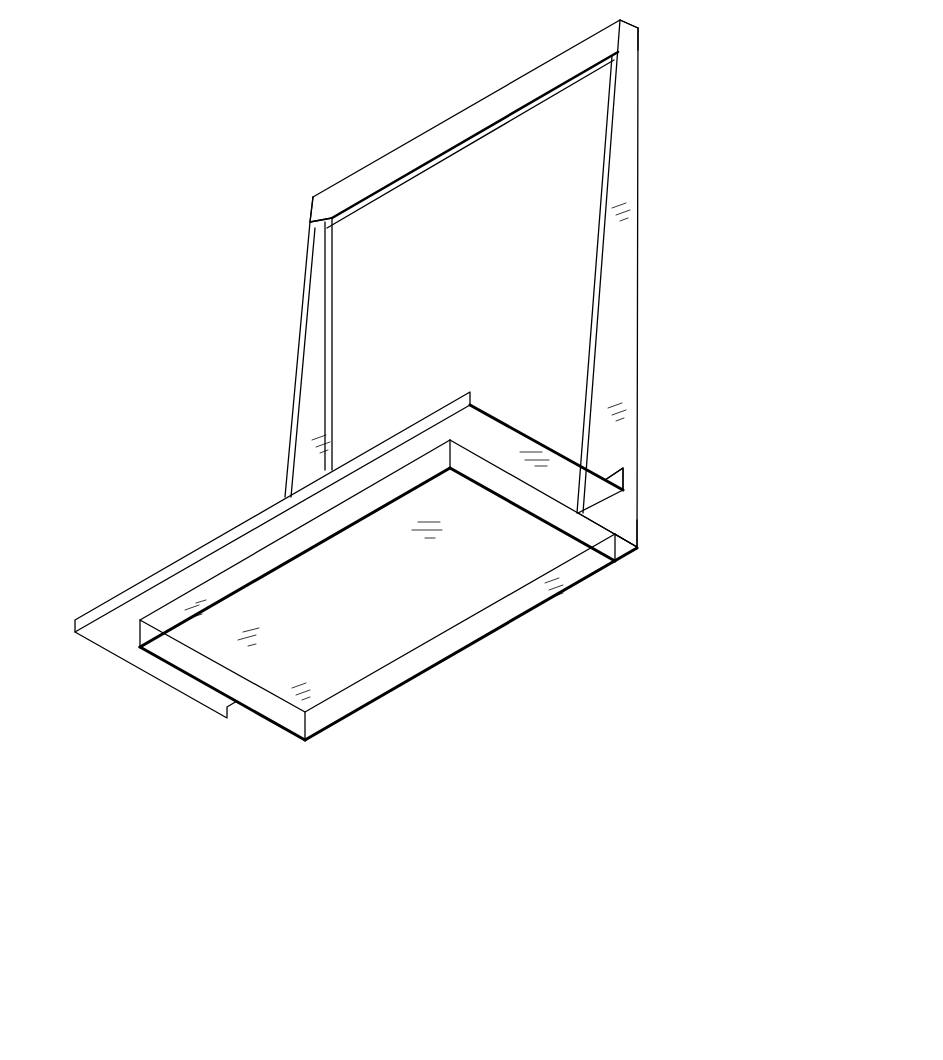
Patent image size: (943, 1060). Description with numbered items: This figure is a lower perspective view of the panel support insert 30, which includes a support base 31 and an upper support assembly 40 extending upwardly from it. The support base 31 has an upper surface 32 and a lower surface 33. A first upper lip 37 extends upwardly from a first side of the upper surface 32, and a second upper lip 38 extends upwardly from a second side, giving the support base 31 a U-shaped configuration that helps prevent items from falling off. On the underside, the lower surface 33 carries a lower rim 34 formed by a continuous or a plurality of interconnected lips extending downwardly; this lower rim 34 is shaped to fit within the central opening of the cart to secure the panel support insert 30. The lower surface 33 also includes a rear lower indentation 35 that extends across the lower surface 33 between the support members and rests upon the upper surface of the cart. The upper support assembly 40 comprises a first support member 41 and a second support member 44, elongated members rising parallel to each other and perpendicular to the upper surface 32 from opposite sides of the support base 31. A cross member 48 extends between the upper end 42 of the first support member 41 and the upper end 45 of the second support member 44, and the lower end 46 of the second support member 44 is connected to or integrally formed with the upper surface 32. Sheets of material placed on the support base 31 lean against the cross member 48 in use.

The panel support insert 30 is at (150, 268).
The support base 31 is at (117, 638).
The upper surface 32 is at (488, 396).
The lower surface 33 is at (350, 597).
The lower rim 34 is at (473, 643).
The rear lower indentation 35 is at (622, 545).
The first upper lip 37 is at (113, 602).
The second upper lip 38 is at (614, 468).
The upper support assembly 40 is at (588, 245).
The first support member 41 is at (299, 362).
The upper end 42 is at (306, 216).
The second support member 44 is at (640, 283).
The upper end 45 is at (640, 42).
The lower end 46 is at (614, 516).
The cross member 48 is at (492, 94).